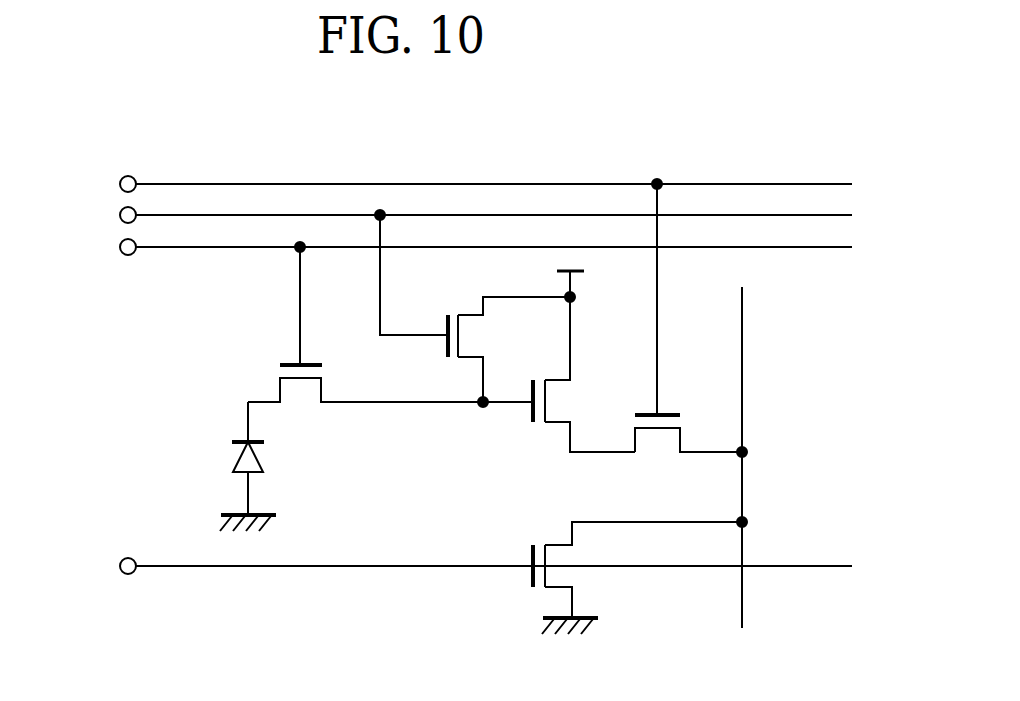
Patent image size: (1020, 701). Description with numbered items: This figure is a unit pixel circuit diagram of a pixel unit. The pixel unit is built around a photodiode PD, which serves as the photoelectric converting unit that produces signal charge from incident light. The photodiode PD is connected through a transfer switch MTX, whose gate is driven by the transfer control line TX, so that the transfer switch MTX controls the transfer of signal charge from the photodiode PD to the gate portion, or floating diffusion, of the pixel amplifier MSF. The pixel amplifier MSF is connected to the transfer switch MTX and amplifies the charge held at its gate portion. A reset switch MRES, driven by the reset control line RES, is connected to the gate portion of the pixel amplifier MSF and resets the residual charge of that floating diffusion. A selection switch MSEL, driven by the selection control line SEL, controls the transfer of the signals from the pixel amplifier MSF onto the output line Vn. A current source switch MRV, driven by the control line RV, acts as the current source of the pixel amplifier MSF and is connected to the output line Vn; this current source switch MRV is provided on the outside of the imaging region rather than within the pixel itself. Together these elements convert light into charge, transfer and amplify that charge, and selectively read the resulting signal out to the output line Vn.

The selection signal line φ SEL is at (441, 184).
The reset signal line φ RES is at (441, 215).
The transfer signal line φ TX is at (450, 247).
The signal line φ RV is at (447, 566).
The transfer switch MTX is at (325, 324).
The photodiode PD is at (219, 466).
The reset switch MRES is at (482, 311).
The pixel amplifier MSF is at (555, 384).
The selection switch MSEL is at (681, 341).
The current source switch MRV is at (587, 575).
The output line Vn is at (741, 477).